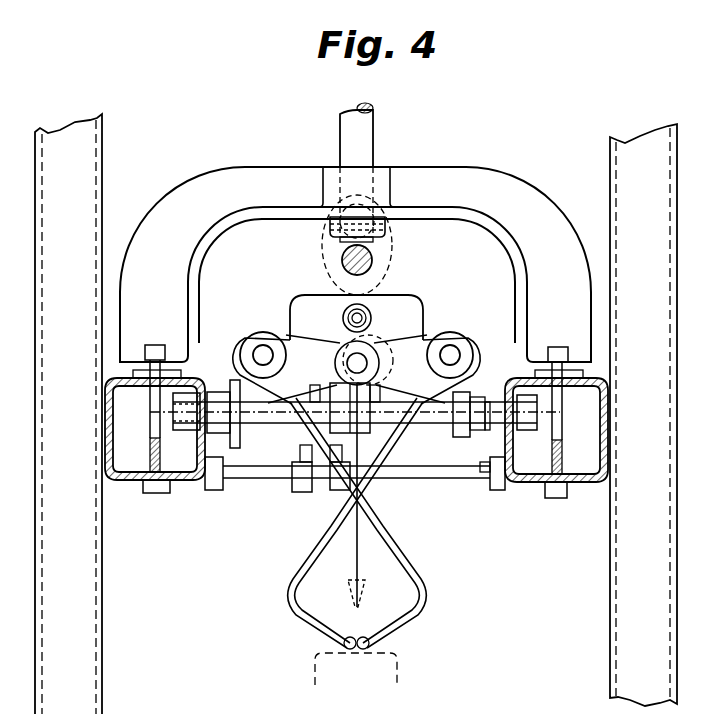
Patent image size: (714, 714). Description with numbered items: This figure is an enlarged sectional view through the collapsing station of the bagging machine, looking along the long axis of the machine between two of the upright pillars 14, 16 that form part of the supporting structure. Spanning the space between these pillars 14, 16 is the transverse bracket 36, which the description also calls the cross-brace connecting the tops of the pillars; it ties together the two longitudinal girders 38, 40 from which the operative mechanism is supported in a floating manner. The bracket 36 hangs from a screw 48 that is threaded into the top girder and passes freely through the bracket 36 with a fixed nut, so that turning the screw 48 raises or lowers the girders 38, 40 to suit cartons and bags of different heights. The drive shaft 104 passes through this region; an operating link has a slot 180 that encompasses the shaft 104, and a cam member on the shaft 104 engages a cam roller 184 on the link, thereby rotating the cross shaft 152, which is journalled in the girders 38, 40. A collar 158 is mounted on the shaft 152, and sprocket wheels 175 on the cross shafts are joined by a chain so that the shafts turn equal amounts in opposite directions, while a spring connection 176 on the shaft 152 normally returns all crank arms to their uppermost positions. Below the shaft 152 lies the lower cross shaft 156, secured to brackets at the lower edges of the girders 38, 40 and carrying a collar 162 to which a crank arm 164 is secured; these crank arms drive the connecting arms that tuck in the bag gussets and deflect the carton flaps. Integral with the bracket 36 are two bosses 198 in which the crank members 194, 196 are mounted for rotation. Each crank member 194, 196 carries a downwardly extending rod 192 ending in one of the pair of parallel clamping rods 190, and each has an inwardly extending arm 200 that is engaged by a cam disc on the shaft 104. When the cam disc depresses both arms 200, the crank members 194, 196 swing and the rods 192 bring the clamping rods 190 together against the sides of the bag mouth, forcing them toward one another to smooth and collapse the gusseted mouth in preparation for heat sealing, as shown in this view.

The upright pillar 14 is at (90, 637).
The upright pillar 16 is at (618, 610).
The bracket 36 is at (514, 195).
The longitudinal girder 38 is at (143, 480).
The longitudinal girder 40 is at (580, 483).
The screw 48 is at (362, 140).
The drive shaft 104 is at (372, 262).
The cross shaft 152 is at (423, 415).
The cross shaft 156 is at (460, 477).
The collar 158 is at (332, 385).
The collar 162 is at (300, 490).
The crank arm 164 is at (298, 448).
The sprocket wheel 175 is at (237, 430).
The spring connection 176 is at (492, 430).
The slot 180 is at (372, 232).
The cam roller 184 is at (372, 318).
The clamping rod 190 is at (356, 661).
The rod 192 is at (303, 572).
The crank member 194 is at (292, 340).
The crank member 196 is at (416, 336).
The boss 198 is at (243, 353).
The inwardly extending arm 200 is at (325, 343).